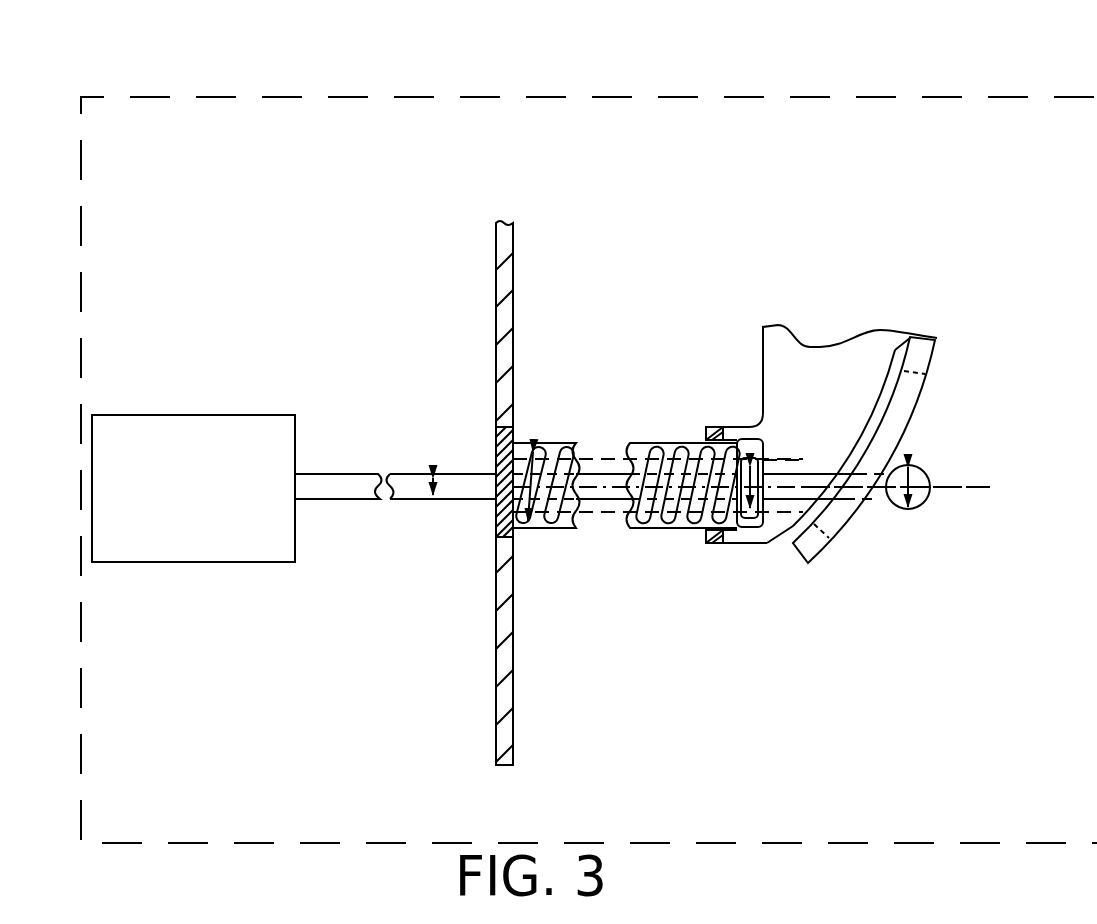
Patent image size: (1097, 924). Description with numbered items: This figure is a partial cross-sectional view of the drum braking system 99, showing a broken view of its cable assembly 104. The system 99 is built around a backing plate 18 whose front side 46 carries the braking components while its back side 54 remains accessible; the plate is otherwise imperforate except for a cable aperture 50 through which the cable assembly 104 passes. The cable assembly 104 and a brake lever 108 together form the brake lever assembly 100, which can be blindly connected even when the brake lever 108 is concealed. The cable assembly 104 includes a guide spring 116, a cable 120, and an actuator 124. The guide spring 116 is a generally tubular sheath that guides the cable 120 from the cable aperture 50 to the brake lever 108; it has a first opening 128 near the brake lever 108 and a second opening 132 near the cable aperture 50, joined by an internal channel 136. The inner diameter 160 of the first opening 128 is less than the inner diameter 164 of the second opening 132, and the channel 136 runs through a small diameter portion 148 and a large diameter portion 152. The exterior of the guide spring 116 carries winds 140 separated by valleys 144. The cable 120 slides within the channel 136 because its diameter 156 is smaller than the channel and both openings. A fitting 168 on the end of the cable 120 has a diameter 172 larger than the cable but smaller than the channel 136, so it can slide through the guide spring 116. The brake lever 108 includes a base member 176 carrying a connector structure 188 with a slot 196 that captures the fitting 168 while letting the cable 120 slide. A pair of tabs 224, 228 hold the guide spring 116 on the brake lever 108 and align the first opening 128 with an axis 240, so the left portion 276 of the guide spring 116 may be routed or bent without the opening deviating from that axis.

The backing plate 18 is at (513, 262).
The front side 46 is at (513, 320).
The cable aperture 50 is at (494, 436).
The back side 54 is at (496, 295).
The drum braking system 99 is at (762, 88).
The brake lever assembly 100 is at (722, 216).
The cable assembly 104 is at (250, 298).
The brake lever 108 is at (818, 347).
The guide spring 116 is at (560, 443).
The cable 120 is at (337, 473).
The actuator 124 is at (122, 564).
The first opening 128 is at (772, 484).
The second opening 132 is at (486, 488).
The internal channel 136 is at (616, 445).
The winds 140 is at (682, 443).
The valleys 144 is at (695, 443).
The small diameter portion 148 is at (747, 438).
The large diameter portion 152 is at (663, 528).
The diameter of the cable 156 is at (424, 492).
The inner diameter of the first opening 160 is at (740, 522).
The inner diameter of the second opening 164 is at (550, 530).
The fitting 168 is at (925, 475).
The diameter of the fitting 172 is at (915, 511).
The base member 176 is at (781, 327).
The connector structure 188 is at (940, 352).
The slot 196 is at (923, 415).
The tab 224 is at (722, 437).
The tab 228 is at (713, 543).
The axis 240 is at (980, 487).
The left portion 276 is at (642, 528).